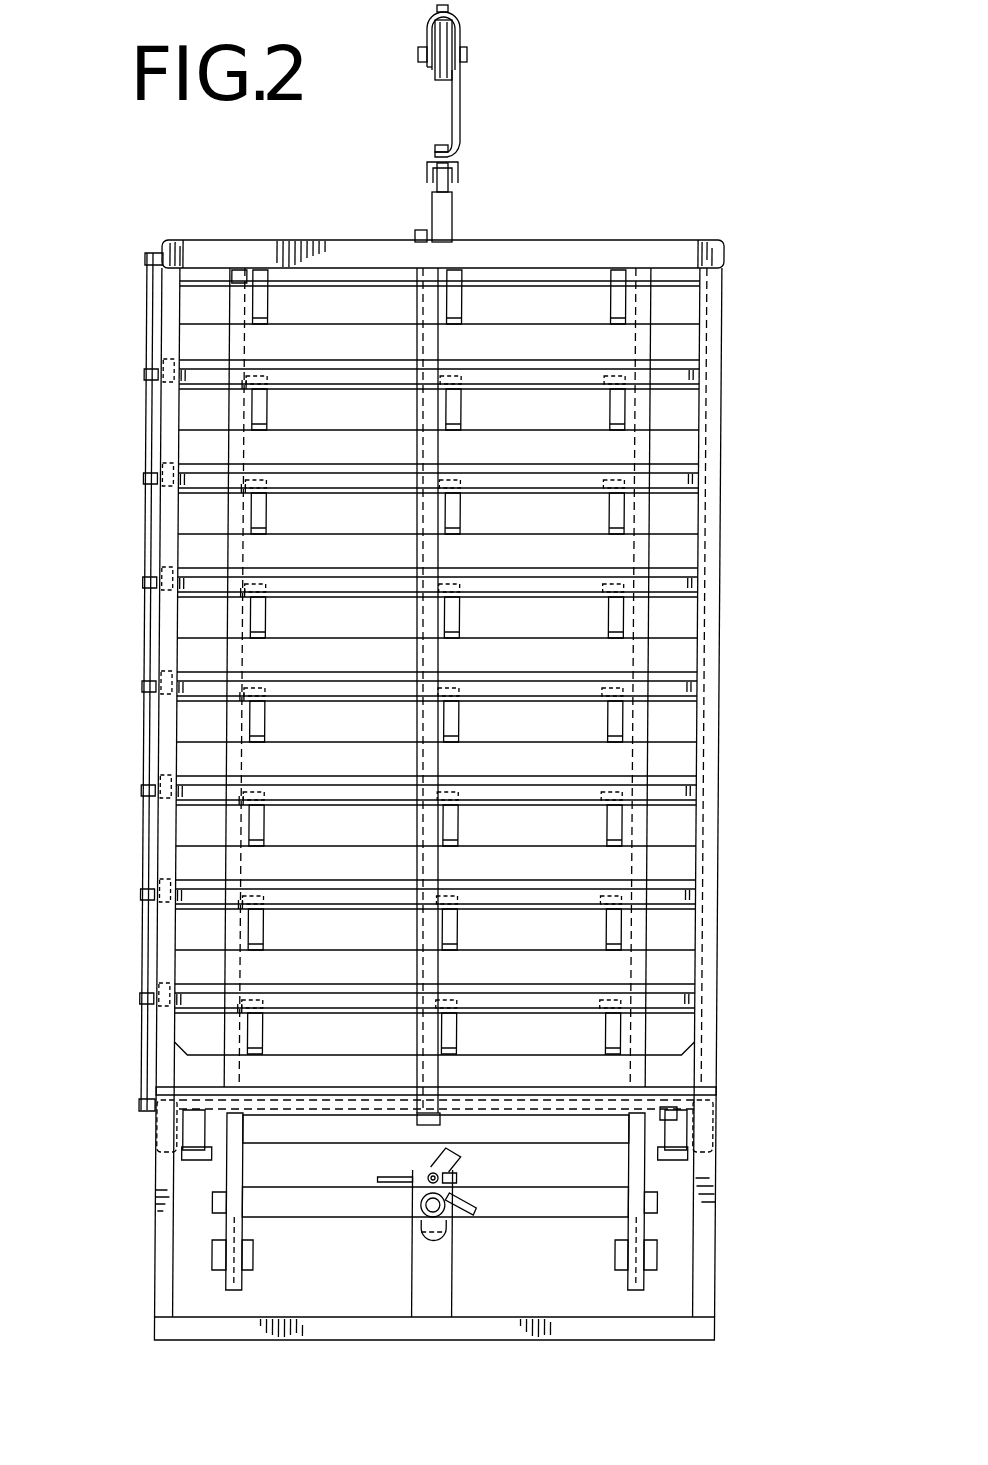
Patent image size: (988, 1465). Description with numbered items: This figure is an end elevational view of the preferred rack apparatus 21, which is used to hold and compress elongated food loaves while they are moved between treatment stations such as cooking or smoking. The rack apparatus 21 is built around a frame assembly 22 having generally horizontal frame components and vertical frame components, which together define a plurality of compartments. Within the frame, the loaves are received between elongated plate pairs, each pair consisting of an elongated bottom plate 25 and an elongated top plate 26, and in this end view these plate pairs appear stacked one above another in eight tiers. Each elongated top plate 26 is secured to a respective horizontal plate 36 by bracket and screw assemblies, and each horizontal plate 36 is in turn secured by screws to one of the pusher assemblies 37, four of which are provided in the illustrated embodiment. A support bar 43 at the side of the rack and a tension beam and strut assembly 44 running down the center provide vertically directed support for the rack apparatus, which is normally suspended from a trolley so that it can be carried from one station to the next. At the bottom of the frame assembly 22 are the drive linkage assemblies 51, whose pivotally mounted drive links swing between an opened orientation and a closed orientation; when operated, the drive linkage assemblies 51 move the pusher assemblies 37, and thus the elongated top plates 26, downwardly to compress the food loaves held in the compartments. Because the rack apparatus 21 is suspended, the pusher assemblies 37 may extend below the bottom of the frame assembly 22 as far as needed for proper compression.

The rack apparatus 21 is at (121, 830).
The frame assembly 22 is at (722, 1222).
The elongated bottom plate 25 is at (679, 570).
The elongated top plate 26 is at (685, 416).
The horizontal plate 36 is at (592, 278).
The pusher assembly 37 is at (645, 345).
The support bar 43 is at (152, 653).
The tension beam and strut assembly 44 is at (430, 300).
The drive linkage assembly 51 is at (212, 1242).